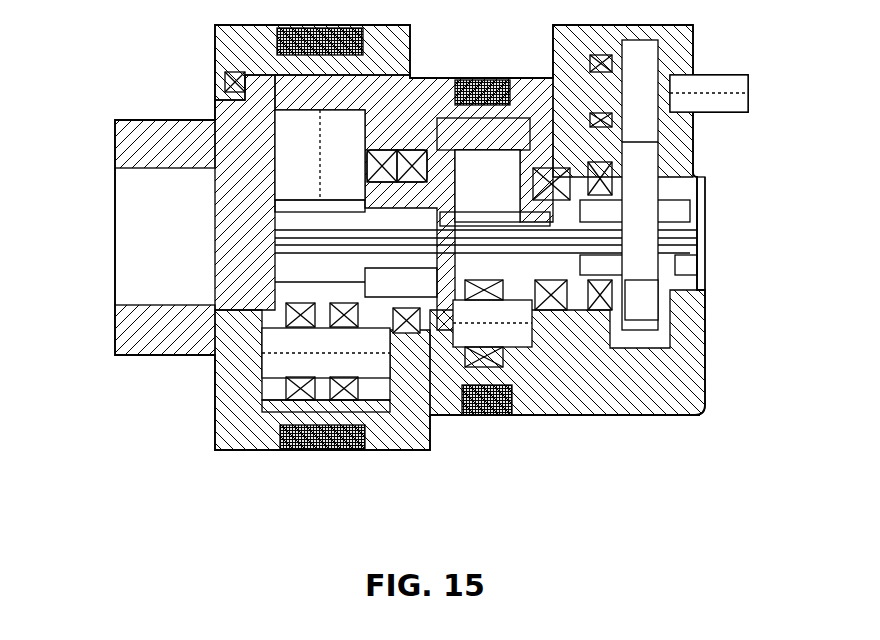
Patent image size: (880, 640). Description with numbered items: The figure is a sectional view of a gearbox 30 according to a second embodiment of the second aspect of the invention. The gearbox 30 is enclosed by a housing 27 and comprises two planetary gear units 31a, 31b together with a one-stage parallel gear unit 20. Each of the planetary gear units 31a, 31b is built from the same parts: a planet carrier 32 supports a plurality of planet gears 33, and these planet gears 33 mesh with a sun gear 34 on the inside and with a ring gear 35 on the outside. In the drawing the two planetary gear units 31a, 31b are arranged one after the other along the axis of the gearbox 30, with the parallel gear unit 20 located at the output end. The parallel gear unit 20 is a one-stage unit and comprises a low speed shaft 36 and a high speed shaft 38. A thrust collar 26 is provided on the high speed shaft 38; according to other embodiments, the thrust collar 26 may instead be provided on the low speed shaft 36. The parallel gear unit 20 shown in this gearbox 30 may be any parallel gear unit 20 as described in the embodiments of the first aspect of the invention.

The gearbox 30 is at (146, 42).
The planet carrier 32 is at (153, 143).
The ring gear 35 is at (475, 80).
The sun gear 34 is at (305, 270).
The planet gears 33 is at (288, 410).
The thrust collar 26 is at (660, 47).
The high speed shaft 38 is at (705, 86).
The low speed shaft 36 is at (692, 222).
The housing 27 is at (688, 352).
The planetary gear unit 31a is at (321, 457).
The planetary gear unit 31b is at (488, 427).
The parallel gear unit 20 is at (637, 427).